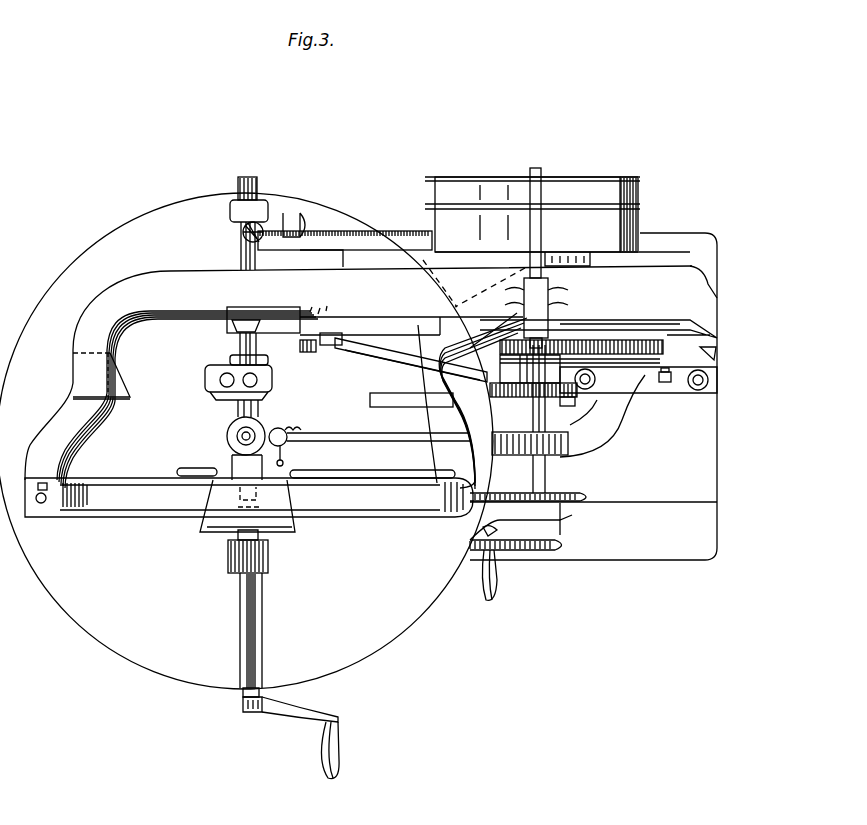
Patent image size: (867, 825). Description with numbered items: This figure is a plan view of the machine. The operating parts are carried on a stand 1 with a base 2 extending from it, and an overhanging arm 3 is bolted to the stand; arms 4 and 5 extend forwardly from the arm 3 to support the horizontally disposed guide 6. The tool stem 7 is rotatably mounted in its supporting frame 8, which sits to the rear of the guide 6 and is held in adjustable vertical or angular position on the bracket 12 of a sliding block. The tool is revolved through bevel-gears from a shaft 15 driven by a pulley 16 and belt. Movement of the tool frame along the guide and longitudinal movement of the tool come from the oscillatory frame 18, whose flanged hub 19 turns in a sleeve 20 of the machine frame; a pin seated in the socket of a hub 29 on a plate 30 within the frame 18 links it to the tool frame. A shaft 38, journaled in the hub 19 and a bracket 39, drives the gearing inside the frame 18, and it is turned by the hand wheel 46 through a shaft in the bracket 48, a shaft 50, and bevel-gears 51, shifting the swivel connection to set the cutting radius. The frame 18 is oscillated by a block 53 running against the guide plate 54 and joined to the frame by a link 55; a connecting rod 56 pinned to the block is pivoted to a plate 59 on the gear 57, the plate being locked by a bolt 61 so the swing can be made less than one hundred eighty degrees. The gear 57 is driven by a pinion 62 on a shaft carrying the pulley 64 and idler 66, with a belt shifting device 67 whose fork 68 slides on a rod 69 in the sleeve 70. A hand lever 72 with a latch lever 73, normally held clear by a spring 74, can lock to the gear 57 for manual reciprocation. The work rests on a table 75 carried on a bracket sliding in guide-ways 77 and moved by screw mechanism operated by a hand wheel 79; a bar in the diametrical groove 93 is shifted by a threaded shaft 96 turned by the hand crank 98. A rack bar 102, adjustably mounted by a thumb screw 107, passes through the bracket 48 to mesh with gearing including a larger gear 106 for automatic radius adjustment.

The stand 1 is at (593, 396).
The base 2 is at (557, 531).
The overhanging arm 3 is at (371, 377).
The arm 4 is at (90, 400).
The arm 5 is at (481, 403).
The guide 6 is at (355, 505).
The tool stem 7 is at (238, 436).
The supporting frame 8 is at (232, 464).
The bracket 12 is at (205, 532).
The shaft 15 is at (262, 543).
The pulley 16 is at (228, 572).
The oscillatory frame 18 is at (205, 380).
The flanged hub 19 is at (240, 350).
The sleeve 20 is at (227, 335).
The hub 29 is at (260, 412).
The plate 30 is at (216, 400).
The shaft 38 is at (241, 260).
The bracket 39 is at (254, 190).
The hand wheel 46 is at (590, 494).
The bracket 48 is at (626, 423).
The shaft 50 is at (370, 232).
The bevel-gears 51 is at (243, 230).
The lever 53 is at (343, 348).
The guide plate 54 is at (386, 322).
The link 55 is at (312, 354).
The connecting rod 56 is at (380, 362).
The gear 57 is at (613, 340).
The plate 59 is at (530, 366).
The bolt 61 is at (505, 400).
The pinion 62 is at (500, 338).
The pulley 64 is at (640, 222).
The idler 66 is at (638, 185).
The belt shifting device 67 is at (539, 182).
The belt engaging fork 68 is at (470, 205).
The bearing housing 69 is at (550, 286).
The sleeve 70 is at (549, 320).
The hand lever 72 is at (650, 332).
The latch lever 73 is at (718, 362).
The spring 74 is at (716, 345).
The table 75 is at (166, 671).
The guide-ways 77 is at (565, 515).
The hand wheel 79 is at (512, 555).
The groove 93 is at (240, 622).
The threaded shaft 96 is at (256, 640).
The hand crank 98 is at (326, 745).
The rack bar 102 is at (372, 443).
The larger gear 106 is at (562, 406).
The thumb screw 107 is at (284, 462).